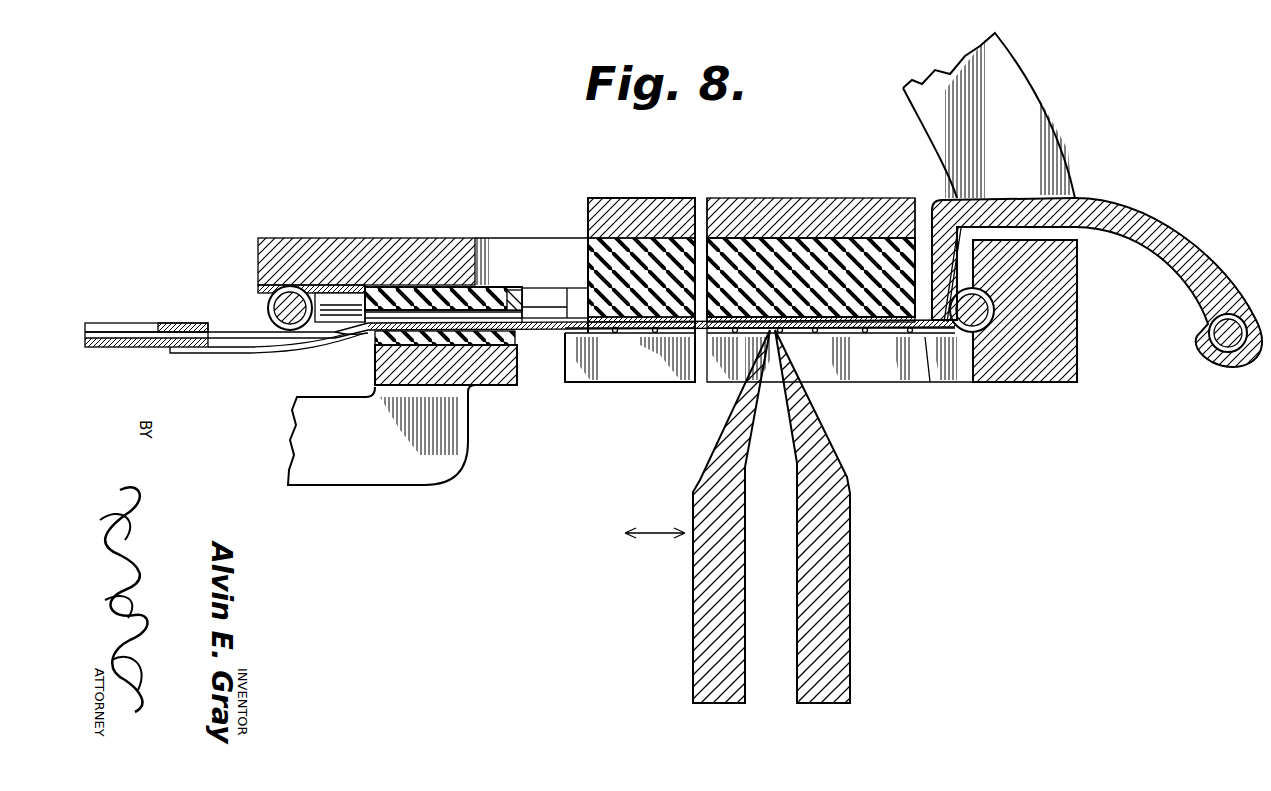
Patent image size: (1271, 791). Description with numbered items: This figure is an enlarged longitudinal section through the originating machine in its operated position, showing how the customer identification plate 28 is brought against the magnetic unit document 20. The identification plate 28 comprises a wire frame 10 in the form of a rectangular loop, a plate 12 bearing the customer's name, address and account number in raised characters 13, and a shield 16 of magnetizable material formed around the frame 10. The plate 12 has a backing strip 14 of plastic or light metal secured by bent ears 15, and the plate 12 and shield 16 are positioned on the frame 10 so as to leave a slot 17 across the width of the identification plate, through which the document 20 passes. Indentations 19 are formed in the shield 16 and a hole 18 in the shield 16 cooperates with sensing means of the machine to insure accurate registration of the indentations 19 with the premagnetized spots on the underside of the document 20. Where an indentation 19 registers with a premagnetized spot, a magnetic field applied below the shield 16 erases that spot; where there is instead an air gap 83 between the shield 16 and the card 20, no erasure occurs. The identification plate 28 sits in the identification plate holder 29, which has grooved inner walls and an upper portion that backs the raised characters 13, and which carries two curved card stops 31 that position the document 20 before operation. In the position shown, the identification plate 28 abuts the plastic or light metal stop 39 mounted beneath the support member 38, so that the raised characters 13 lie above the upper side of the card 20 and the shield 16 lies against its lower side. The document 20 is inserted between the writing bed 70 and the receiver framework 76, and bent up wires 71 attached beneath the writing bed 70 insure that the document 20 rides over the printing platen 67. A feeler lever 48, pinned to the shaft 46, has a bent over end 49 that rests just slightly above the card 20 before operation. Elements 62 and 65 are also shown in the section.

The wire frame 10 is at (272, 300).
The plate 12 is at (360, 340).
The raised characters 13 is at (400, 334).
The backing strip 14 is at (490, 287).
The bent ears 15 is at (525, 294).
The shield 16 is at (860, 337).
The slot 17 is at (548, 300).
The hole 18 is at (932, 337).
The indentations 19 is at (672, 333).
The magnetic unit document 20 is at (240, 331).
The customer identification plate 28 is at (595, 337).
The identification plate holder 29 is at (380, 240).
The curved card stops 31 is at (1012, 72).
The support member 38 is at (740, 198).
The stop 39 is at (805, 240).
The shaft 46 is at (1221, 354).
The feeler lever 48 is at (1162, 214).
The bent over end 49 is at (914, 330).
The wedge tool 62 is at (700, 629).
The base body 65 is at (368, 475).
The printing platen 67 is at (498, 388).
The writing bed 70 is at (130, 349).
The bent up wires 71 is at (250, 354).
The framework 76 is at (178, 322).
The air gap 83 is at (814, 335).